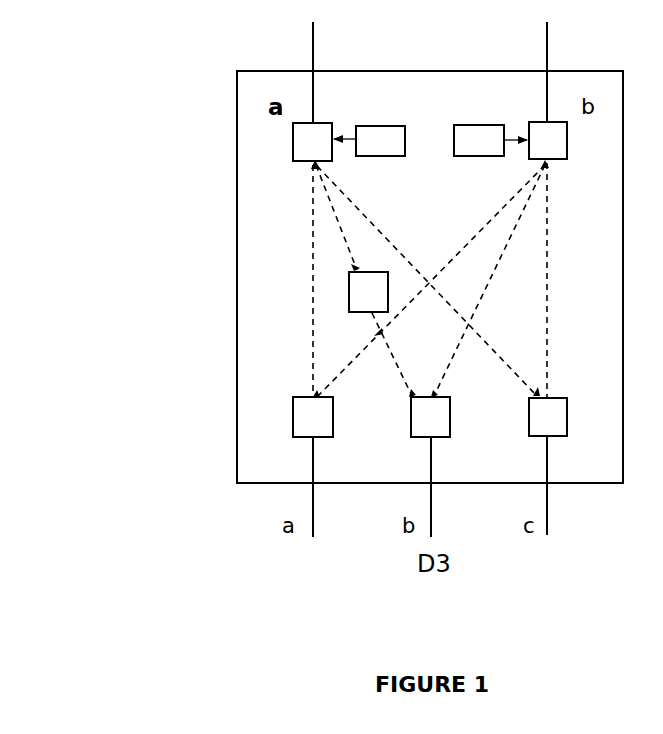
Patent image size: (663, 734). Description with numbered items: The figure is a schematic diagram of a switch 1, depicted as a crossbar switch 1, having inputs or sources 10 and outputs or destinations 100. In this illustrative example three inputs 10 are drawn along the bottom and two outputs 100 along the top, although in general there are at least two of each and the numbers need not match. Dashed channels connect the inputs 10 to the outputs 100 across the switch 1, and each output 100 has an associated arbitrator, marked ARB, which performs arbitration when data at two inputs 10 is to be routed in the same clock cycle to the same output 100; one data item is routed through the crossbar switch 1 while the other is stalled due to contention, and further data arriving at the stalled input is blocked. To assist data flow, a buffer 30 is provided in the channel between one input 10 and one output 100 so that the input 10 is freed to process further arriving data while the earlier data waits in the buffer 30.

The switch 1 is at (158, 275).
The outputs 100 is at (216, 141).
The inputs 10 is at (216, 418).
The buffer 30 is at (382, 307).